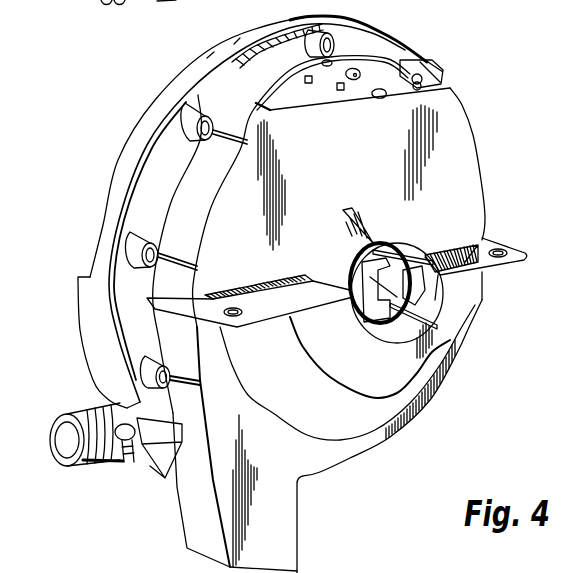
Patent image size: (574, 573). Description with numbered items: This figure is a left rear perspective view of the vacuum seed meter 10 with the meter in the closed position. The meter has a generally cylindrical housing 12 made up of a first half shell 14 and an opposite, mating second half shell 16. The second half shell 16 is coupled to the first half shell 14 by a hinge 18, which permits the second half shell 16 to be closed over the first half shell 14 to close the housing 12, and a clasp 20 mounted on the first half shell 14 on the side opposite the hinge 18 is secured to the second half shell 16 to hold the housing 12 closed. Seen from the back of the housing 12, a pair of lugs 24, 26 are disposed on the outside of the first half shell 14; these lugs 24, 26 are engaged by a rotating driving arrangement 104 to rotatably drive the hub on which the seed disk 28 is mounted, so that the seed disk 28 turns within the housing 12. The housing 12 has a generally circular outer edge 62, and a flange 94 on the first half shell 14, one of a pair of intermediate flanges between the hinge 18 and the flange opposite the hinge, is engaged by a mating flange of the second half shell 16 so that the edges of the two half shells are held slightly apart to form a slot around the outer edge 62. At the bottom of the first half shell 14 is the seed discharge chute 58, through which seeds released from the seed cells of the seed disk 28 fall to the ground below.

The vacuum seed meter 10 is at (458, 387).
The cylindrical housing 12 is at (484, 149).
The first half shell 14 is at (447, 107).
The second half shell 16 is at (130, 140).
The hinge 18 is at (128, 455).
The clasp 20 is at (427, 55).
The lug 24 is at (413, 257).
The lug 26 is at (413, 322).
The seed disk 28 is at (287, 90).
The seed discharge chute 58 is at (283, 519).
The outer edge 62 is at (100, 260).
The flange 94 is at (125, 200).
The rotating driving arrangement 104 is at (198, 87).